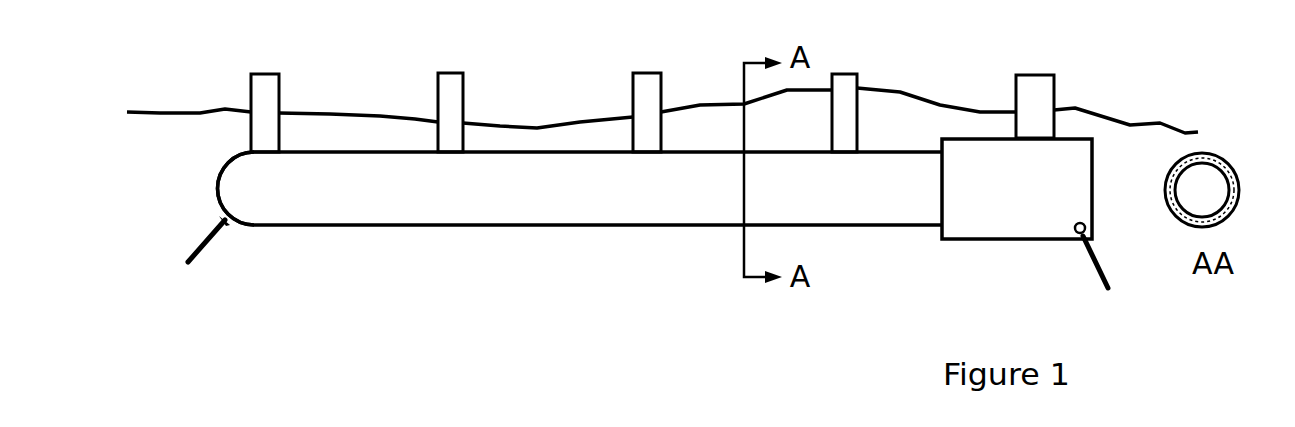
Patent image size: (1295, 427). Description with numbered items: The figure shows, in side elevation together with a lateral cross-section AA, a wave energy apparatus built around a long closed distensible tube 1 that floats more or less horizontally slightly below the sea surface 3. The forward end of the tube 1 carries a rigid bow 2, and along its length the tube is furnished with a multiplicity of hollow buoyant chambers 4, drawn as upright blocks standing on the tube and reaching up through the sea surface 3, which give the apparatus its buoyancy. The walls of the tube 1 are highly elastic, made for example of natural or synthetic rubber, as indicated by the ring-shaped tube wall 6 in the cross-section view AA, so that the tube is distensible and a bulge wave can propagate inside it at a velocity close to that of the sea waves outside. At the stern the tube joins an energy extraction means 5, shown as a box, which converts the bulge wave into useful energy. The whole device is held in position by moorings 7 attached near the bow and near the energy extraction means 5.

The distensible tube 1 is at (380, 228).
The rigid bow 2 is at (217, 173).
The sea surface 3 is at (1083, 108).
The hollow buoyant chambers 4 is at (270, 95).
The energy extraction means 5 is at (987, 222).
The ring cross-section 6 is at (1220, 152).
The moorings 7 is at (207, 243).